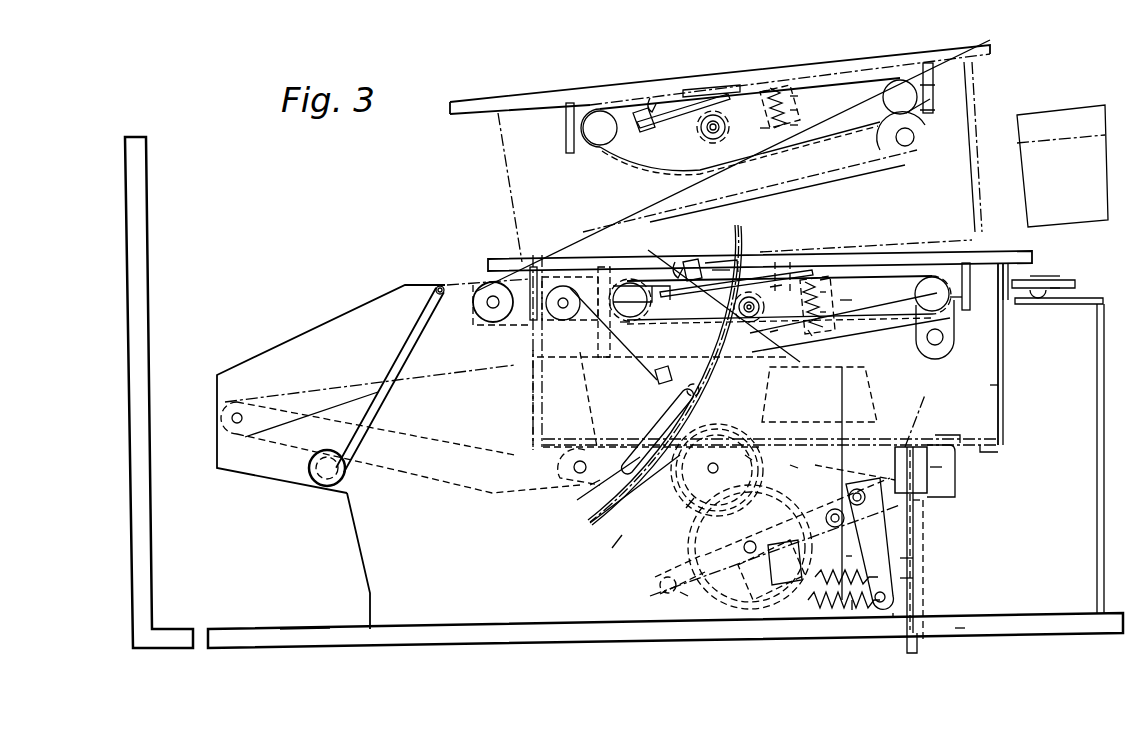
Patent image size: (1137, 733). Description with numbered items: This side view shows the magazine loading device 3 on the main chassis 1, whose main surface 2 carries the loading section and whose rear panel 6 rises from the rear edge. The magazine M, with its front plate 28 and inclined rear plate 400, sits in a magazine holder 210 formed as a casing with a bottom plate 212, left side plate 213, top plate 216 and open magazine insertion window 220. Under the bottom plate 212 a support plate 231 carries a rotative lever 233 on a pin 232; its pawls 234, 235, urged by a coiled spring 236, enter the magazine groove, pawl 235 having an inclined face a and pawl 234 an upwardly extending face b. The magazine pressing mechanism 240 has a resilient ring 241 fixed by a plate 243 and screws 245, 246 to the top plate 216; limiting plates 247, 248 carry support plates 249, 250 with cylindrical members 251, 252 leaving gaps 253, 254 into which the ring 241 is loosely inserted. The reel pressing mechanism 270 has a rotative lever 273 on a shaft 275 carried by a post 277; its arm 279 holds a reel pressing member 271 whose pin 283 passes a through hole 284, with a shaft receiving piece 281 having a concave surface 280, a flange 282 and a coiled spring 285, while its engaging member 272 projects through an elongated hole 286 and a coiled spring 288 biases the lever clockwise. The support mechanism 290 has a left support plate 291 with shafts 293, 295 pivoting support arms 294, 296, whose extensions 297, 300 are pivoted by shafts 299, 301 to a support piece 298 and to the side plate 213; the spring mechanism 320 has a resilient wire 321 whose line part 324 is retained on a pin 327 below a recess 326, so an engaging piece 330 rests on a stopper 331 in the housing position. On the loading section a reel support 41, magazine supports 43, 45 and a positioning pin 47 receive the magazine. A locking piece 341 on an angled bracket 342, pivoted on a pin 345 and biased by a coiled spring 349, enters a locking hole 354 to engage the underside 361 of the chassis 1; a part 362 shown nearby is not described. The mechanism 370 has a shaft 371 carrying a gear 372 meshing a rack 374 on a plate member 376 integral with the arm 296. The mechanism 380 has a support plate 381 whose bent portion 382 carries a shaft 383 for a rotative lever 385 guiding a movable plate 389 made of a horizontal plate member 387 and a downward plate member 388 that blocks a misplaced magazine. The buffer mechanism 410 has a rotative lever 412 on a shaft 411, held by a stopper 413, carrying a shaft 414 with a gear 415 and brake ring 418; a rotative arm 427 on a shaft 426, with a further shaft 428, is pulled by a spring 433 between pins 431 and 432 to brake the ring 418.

The main chassis 1 is at (545, 649).
The main surface 2 is at (295, 620).
The magazine loading device 3 is at (440, 286).
The rear panel 6 is at (147, 320).
The front plate 28 is at (1017, 163).
The reel support 41 is at (866, 390).
The magazine support 43 is at (642, 520).
The magazine support 45 is at (916, 532).
The magazine positioning pin 47 is at (645, 440).
The magazine holder 210 is at (462, 162).
The bottom plate 212 is at (985, 448).
The left side plate 213 is at (990, 386).
The top plate 216 is at (994, 46).
The magazine insertion window 220 is at (978, 118).
The support plate 231 is at (890, 455).
The pin 232 is at (847, 472).
The rotative lever 233 is at (942, 487).
The pawl 234 is at (746, 455).
The pawl 235 is at (940, 442).
The coiled spring 236 is at (791, 465).
The magazine pressing mechanism 240 is at (842, 95).
The resilient ring 241 is at (642, 170).
The plate 243 is at (766, 262).
The screw 245 is at (716, 262).
The screw 246 is at (776, 286).
The limiting plate 247 is at (565, 110).
The limiting plate 248 is at (934, 70).
The support plate 249 is at (625, 323).
The support plate 250 is at (920, 113).
The cylindrical member 251 is at (596, 142).
The cylindrical member 252 is at (884, 104).
The gap 253 is at (566, 136).
The gap 254 is at (934, 94).
The reel pressing mechanism 270 is at (735, 125).
The reel pressing member 271 is at (795, 110).
The engaging member 272 is at (640, 133).
The rotative lever 273 is at (700, 262).
The shaft 275 is at (700, 138).
The post 277 is at (705, 92).
The arm 279 is at (791, 275).
The concave surface 280 is at (832, 330).
The shaft receiving piece 281 is at (795, 127).
The flange 282 is at (766, 96).
The pin 283 is at (851, 300).
The through hole 284 is at (795, 98).
The coiled spring 285 is at (762, 130).
The vertically elongated hole 286 is at (674, 264).
The coiled spring 288 is at (715, 141).
The support mechanism 290 is at (488, 439).
The left support plate 291 is at (360, 541).
The shaft 293 is at (239, 425).
The support arm 294 is at (391, 469).
The shaft 295 is at (480, 308).
The support arm 296 is at (525, 322).
The extension 297 is at (493, 494).
The support piece 298 is at (573, 468).
The shaft 299 is at (588, 486).
The extension 300 is at (874, 162).
The shaft 301 is at (908, 150).
The spring mechanism 320 is at (375, 326).
The resilient wire 321 is at (410, 343).
The line part 324 is at (400, 378).
The recess 326 is at (443, 288).
The pin 327 is at (338, 478).
The engaging piece 330 is at (664, 378).
The stopper 331 is at (666, 300).
The locking piece 341 is at (915, 606).
The angled bracket 342 is at (910, 440).
The pin 345 is at (940, 467).
The coiled spring 349 is at (916, 507).
The locking hole 354 is at (920, 632).
The underside 361 is at (960, 632).
The bracket 362 is at (893, 615).
The mechanism 370 is at (752, 415).
The shaft 371 is at (713, 472).
The gear 372 is at (677, 508).
The rack 374 is at (600, 555).
The plate member 376 is at (592, 380).
The mechanism 380 is at (1079, 272).
The support plate 381 is at (1097, 487).
The bent portion 382 is at (1055, 304).
The shaft 383 is at (1076, 292).
The rotative lever 385 is at (1032, 300).
The horizontal plate member 387 is at (1042, 279).
The plate member 388 is at (1003, 266).
The movable plate 389 is at (1025, 279).
The inclined rear plate 400 is at (1003, 396).
The buffer mechanism 410 is at (666, 547).
The shaft 411 is at (659, 585).
The rotative lever 412 is at (681, 592).
The stopper 413 is at (846, 535).
The shaft 414 is at (744, 548).
The gear 415 is at (745, 606).
The brake ring 418 is at (727, 592).
The shaft 426 is at (842, 520).
The rotative arm 427 is at (912, 557).
The shaft 428 is at (848, 555).
The pin 431 is at (913, 578).
The pin 432 is at (790, 603).
The spring 433 is at (852, 603).
The magazine M is at (537, 376).
The forwardly inclined face a is at (968, 447).
The upwardly extending face b is at (770, 462).